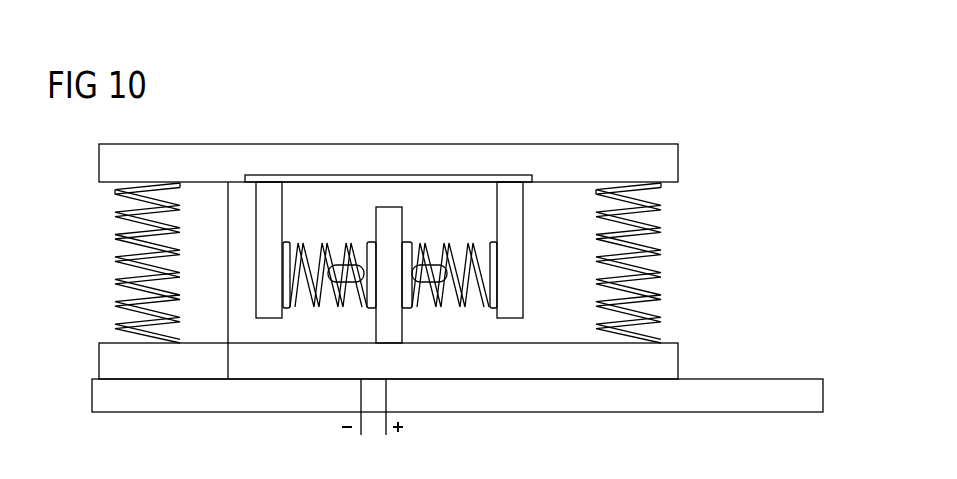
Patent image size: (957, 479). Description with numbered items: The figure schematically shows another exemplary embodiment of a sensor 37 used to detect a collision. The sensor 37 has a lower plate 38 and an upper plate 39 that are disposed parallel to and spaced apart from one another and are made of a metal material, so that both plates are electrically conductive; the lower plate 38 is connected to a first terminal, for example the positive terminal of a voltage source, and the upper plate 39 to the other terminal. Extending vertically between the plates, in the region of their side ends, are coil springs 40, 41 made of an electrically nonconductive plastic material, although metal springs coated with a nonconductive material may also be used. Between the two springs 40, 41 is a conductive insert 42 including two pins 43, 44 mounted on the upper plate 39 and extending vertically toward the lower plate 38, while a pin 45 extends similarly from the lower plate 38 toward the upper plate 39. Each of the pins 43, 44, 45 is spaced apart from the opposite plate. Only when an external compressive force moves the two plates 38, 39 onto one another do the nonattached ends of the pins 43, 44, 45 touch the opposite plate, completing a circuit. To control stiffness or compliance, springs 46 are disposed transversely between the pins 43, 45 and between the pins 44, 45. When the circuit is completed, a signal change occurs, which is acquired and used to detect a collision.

The sensor 37 is at (752, 221).
The lower plate 38 is at (678, 360).
The upper plate 39 is at (678, 163).
The coil spring 40 is at (118, 255).
The coil spring 41 is at (663, 250).
The conductive insert 42 is at (538, 229).
The pin 43 is at (265, 203).
The pin 44 is at (508, 203).
The pin 45 is at (389, 220).
The springs 46 is at (298, 247).